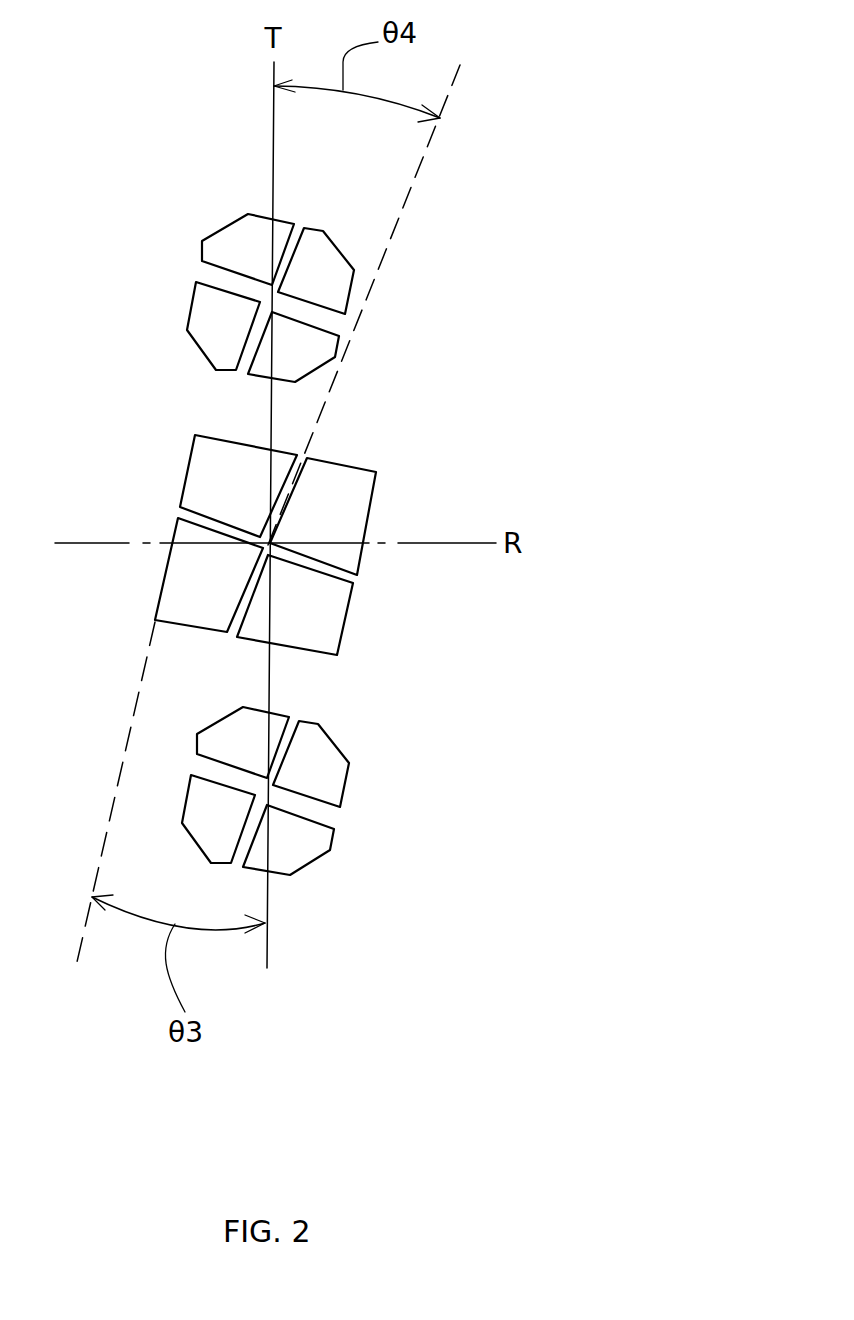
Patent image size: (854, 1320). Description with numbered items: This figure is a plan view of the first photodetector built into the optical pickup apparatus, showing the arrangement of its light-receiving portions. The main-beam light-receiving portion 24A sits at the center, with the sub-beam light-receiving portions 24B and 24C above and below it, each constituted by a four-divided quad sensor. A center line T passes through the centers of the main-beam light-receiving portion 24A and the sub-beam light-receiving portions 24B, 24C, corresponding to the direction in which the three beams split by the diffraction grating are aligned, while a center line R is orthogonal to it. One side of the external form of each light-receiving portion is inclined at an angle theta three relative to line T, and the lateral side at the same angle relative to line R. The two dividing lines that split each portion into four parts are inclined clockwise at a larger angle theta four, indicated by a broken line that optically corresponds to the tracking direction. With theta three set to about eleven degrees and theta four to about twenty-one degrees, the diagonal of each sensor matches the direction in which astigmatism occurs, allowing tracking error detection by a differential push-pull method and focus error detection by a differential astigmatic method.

The main-beam light-receiving portion 24A is at (388, 597).
The sub-beam light-receiving portion 24B is at (380, 320).
The sub-beam light-receiving portion 24C is at (362, 825).